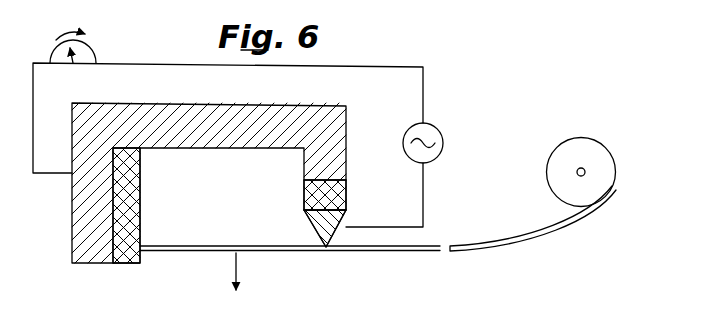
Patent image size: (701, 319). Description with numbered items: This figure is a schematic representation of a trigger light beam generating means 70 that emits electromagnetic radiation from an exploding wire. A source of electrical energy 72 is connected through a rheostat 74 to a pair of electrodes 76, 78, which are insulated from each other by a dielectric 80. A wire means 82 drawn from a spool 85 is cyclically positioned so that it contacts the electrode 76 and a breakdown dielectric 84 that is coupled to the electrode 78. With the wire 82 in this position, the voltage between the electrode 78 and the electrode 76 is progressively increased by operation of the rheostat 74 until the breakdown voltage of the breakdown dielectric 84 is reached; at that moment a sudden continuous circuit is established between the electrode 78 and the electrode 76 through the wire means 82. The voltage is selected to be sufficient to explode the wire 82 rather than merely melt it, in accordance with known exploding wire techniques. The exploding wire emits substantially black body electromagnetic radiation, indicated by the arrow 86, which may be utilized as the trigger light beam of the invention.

The trigger light beam generating means 70 is at (438, 84).
The source of electrical energy 72 is at (442, 137).
The rheostat 74 is at (93, 54).
The electrode 76 is at (311, 222).
The electrode 78 is at (72, 229).
The dielectric 80 is at (346, 200).
The wire means 82 is at (410, 252).
The breakdown dielectric 84 is at (140, 186).
The spool 85 is at (598, 142).
The arrow 86 is at (236, 273).